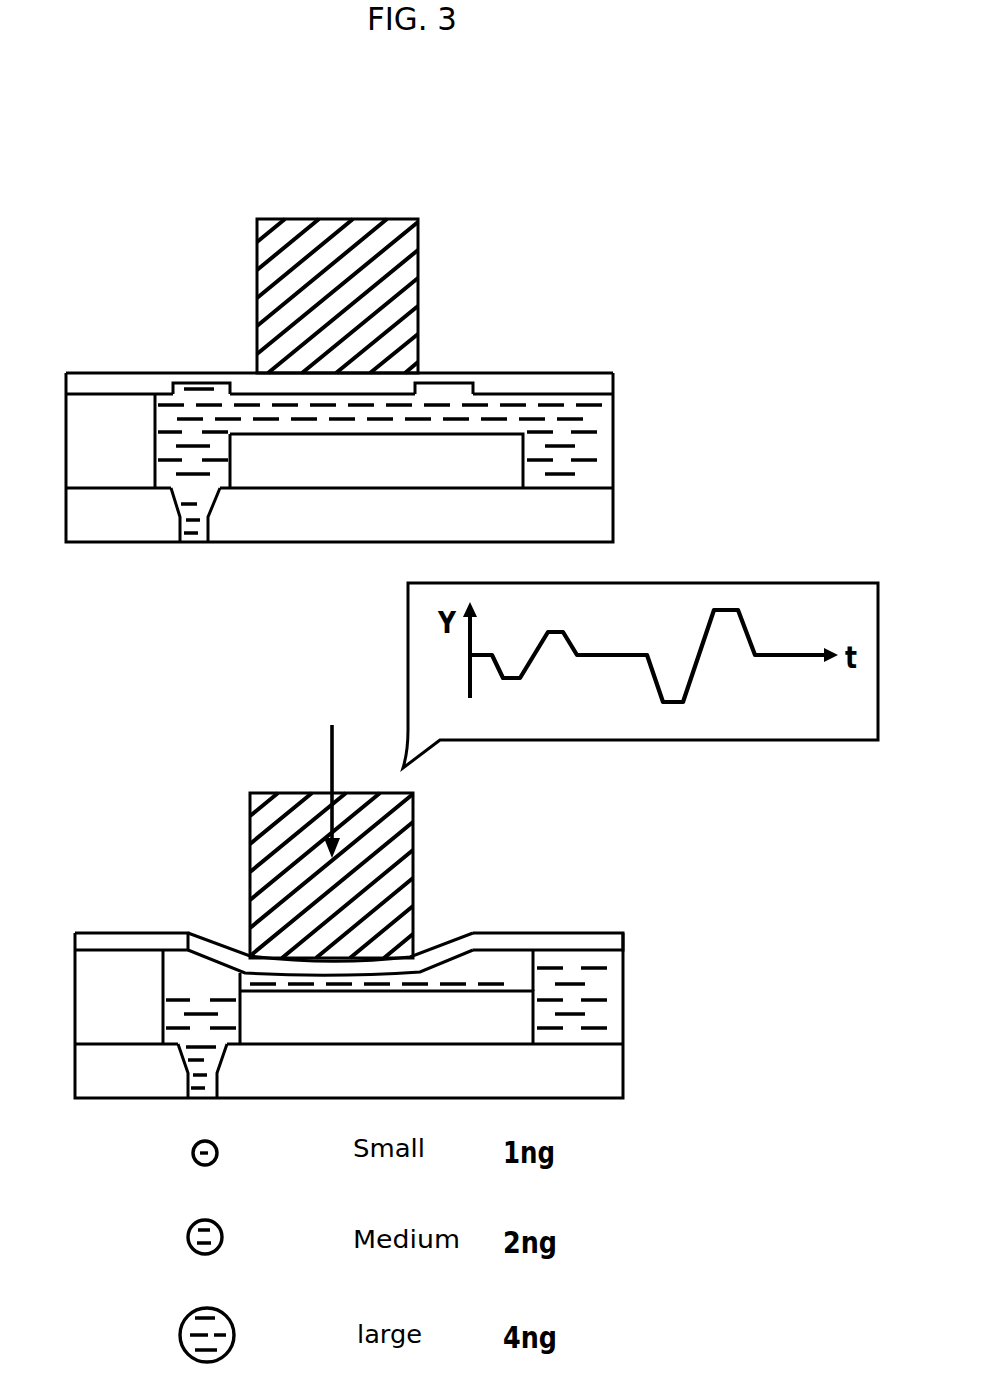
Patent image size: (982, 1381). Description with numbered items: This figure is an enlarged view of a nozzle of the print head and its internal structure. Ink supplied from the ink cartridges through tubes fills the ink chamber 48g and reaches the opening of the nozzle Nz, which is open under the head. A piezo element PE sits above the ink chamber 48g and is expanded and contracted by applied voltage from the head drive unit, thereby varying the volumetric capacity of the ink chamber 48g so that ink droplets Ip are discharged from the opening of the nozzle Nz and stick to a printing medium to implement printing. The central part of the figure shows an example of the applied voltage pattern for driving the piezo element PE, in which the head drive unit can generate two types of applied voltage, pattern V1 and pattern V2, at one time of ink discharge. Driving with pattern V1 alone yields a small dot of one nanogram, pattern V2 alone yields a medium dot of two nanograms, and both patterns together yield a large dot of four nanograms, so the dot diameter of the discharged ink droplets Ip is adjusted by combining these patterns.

The piezo element PE is at (418, 252).
The ink chamber 48g is at (455, 383).
The nozzle Nz is at (193, 543).
The ink droplet Ip is at (218, 1153).
The applied voltage pattern V1 is at (535, 702).
The applied voltage pattern V2 is at (716, 702).